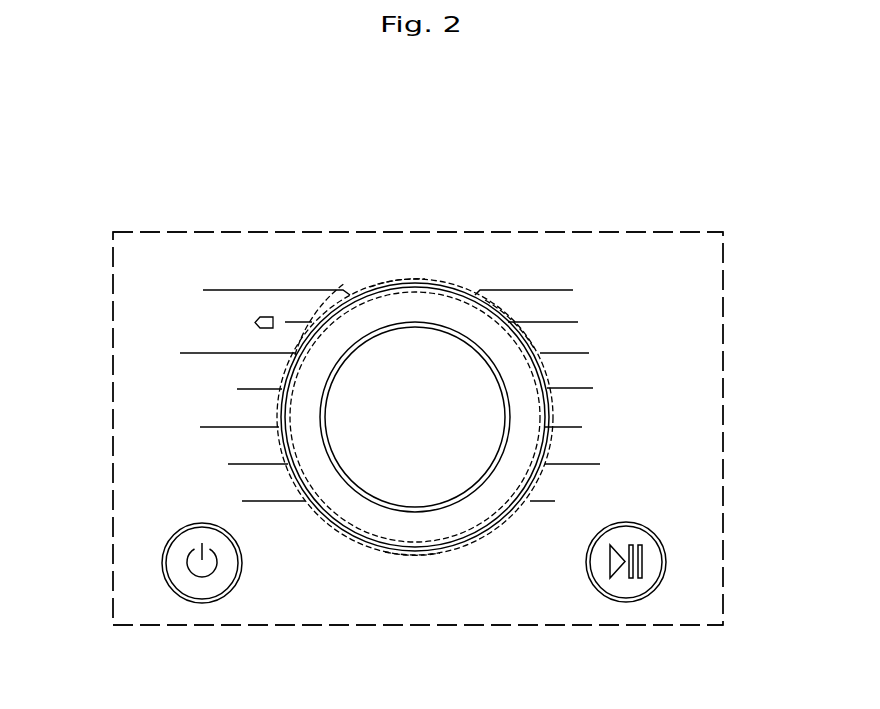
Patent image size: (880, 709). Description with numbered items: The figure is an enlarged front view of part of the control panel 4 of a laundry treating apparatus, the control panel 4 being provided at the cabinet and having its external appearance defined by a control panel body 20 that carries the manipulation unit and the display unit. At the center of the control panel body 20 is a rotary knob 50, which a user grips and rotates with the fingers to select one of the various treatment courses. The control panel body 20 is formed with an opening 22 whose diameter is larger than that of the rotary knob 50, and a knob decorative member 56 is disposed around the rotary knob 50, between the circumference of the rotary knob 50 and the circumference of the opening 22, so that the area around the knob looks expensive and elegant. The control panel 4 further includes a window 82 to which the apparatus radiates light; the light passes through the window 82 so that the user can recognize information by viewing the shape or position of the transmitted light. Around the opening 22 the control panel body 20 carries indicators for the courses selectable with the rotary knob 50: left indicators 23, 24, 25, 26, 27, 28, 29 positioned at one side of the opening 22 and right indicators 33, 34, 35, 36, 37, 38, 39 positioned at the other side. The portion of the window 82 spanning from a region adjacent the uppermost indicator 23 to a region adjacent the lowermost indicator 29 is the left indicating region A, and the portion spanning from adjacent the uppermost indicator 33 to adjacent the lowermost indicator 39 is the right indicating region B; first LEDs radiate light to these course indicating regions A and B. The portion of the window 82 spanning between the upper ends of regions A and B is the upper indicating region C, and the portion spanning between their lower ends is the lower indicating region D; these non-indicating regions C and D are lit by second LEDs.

The control panel 4 is at (612, 222).
The control panel body 20 is at (652, 257).
The opening 22 is at (483, 535).
The window 82 is at (360, 535).
The knob decorative member 56 is at (448, 520).
The rotary knob 50 is at (358, 458).
The left indicating region A is at (465, 293).
The right indicating region B is at (352, 294).
The upper indicating region C is at (397, 280).
The lower indicating region D is at (412, 555).
The uppermost right indicator 33 is at (137, 287).
The right indicator 34 is at (137, 319).
The right indicator 35 is at (137, 350).
The right indicator 36 is at (137, 386).
The right indicator 37 is at (137, 424).
The right indicator 38 is at (137, 461).
The lowermost right indicator 39 is at (137, 498).
The uppermost left indicator 23 is at (693, 289).
The left indicator 24 is at (693, 321).
The left indicator 25 is at (693, 352).
The left indicator 26 is at (693, 388).
The left indicator 27 is at (693, 426).
The left indicator 28 is at (693, 463).
The lowermost left indicator 29 is at (693, 500).